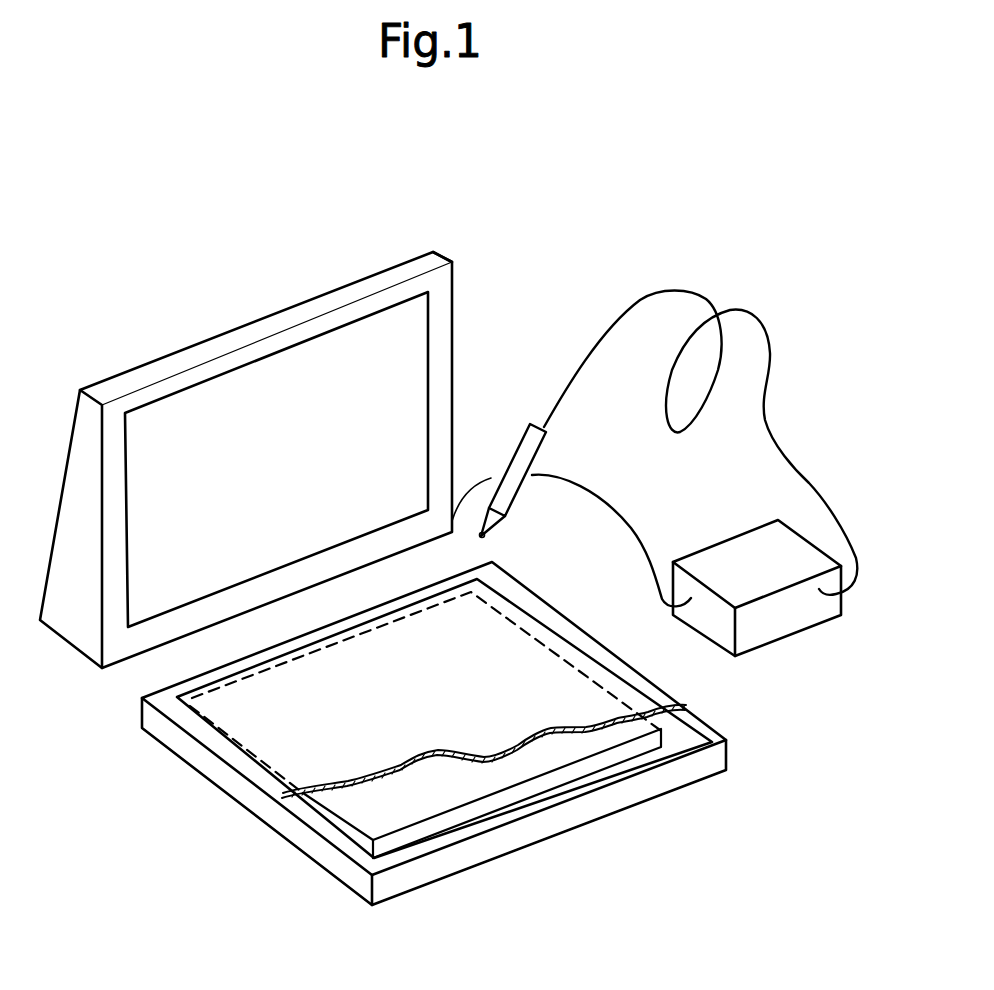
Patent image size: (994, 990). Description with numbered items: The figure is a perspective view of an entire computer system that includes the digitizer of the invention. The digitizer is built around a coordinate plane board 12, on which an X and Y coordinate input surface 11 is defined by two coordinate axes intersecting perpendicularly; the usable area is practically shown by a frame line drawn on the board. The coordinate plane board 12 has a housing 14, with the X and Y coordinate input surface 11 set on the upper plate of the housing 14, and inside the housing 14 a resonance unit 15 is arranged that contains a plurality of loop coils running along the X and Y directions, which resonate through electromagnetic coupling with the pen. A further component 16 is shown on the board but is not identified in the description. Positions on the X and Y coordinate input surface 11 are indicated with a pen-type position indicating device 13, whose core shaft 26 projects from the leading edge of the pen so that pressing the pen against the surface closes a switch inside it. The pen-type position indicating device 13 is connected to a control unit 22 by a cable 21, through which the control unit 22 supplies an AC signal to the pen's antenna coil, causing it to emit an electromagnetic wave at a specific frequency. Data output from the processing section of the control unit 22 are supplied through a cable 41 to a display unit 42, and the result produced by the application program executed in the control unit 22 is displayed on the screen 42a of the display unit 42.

The X and Y coordinate input surface 11 is at (293, 750).
The coordinate plane board 12 is at (296, 848).
The pen-type position indicating device 13 is at (520, 459).
The housing 14 is at (445, 865).
The resonance unit 15 is at (537, 787).
The protective sheet 16 is at (343, 790).
The cable 21 is at (689, 292).
The control unit 22 is at (773, 633).
The core shaft 26 is at (486, 537).
The cable 41 is at (628, 514).
The display unit 42 is at (340, 288).
The screen 42a is at (197, 403).